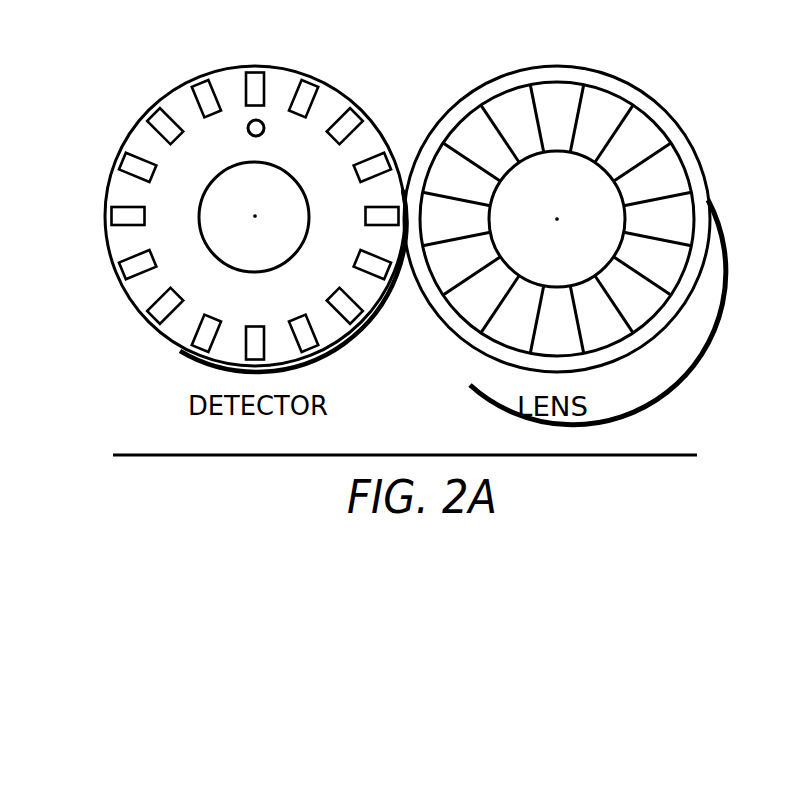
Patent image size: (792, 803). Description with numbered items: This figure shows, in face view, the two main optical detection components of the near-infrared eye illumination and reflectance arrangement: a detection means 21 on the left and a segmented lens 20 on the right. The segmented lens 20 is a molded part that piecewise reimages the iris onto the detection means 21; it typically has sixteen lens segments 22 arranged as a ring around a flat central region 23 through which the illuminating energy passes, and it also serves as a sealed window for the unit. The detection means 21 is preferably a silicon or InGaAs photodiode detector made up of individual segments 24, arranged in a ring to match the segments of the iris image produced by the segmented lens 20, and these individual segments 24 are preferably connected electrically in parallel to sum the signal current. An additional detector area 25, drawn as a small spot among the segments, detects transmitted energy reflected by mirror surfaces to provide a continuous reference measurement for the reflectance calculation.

The segmented lens 20 is at (605, 67).
The detection means 21 is at (333, 88).
The lens segments 22 is at (665, 222).
The flat central region 23 is at (583, 193).
The individual segments 24 is at (343, 128).
The additional detector area 25 is at (252, 119).